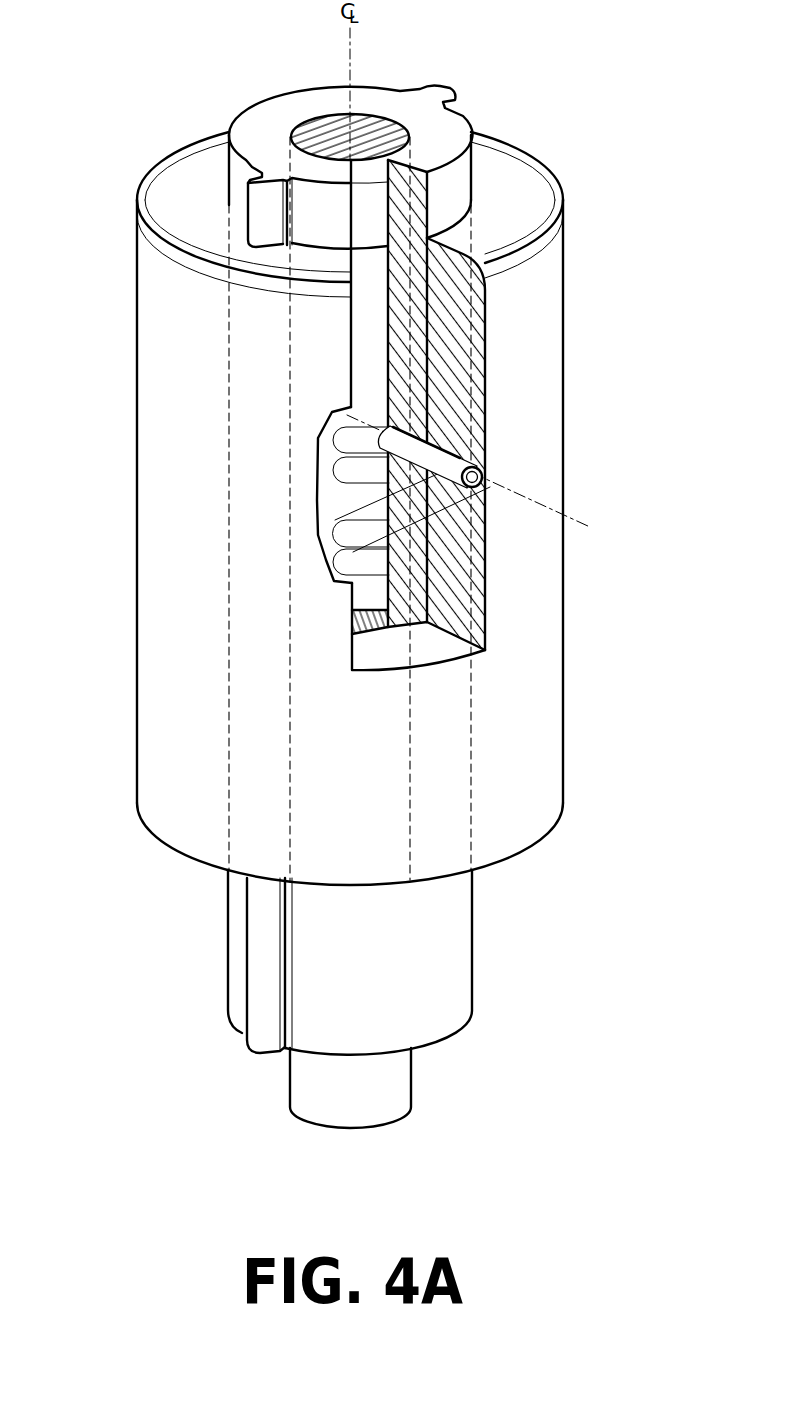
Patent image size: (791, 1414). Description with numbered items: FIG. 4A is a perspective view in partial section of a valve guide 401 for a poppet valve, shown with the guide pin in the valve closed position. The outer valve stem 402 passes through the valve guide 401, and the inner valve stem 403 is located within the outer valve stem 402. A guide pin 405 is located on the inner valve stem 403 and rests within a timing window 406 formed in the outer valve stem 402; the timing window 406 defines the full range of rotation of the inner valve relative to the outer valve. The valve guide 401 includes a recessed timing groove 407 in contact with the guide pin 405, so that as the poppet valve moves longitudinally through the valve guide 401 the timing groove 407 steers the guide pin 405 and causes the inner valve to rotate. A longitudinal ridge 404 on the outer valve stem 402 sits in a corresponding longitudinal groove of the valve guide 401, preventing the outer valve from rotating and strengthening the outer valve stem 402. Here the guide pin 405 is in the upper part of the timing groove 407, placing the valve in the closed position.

The valve guide 401 is at (526, 192).
The outer valve stem 402 is at (383, 100).
The inner valve stem 403 is at (322, 127).
The longitudinal ridge 404 is at (254, 212).
The guide pin 405 is at (478, 458).
The timing window 406 is at (363, 475).
The timing groove 407 is at (367, 553).